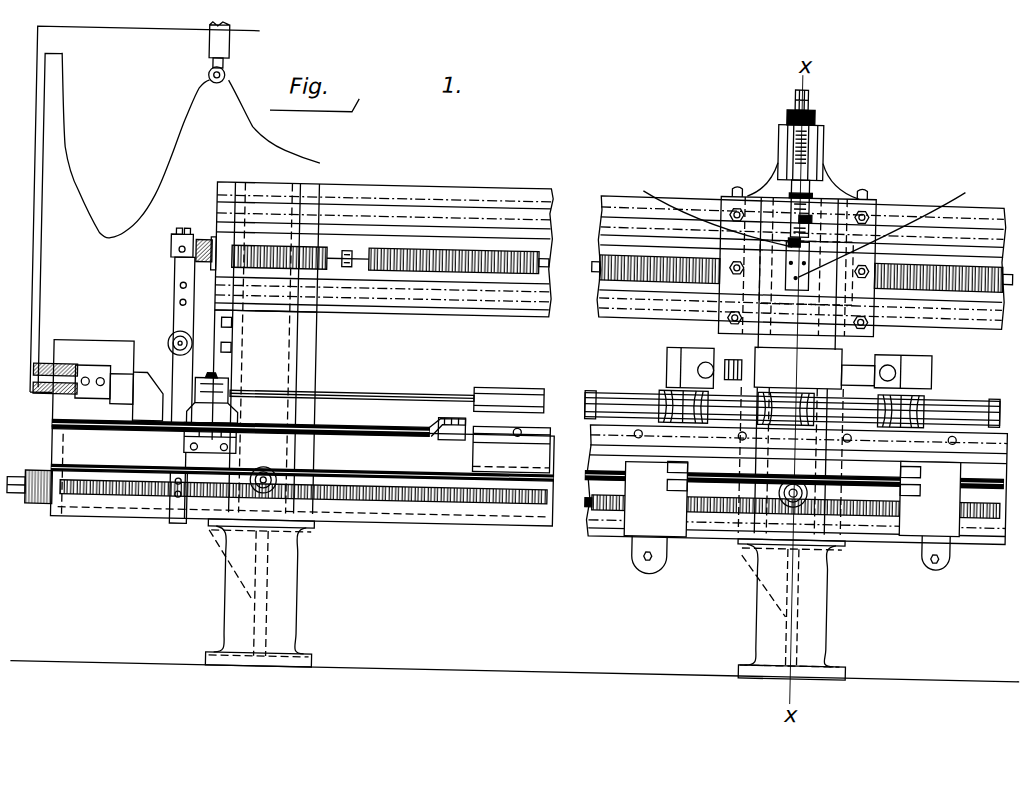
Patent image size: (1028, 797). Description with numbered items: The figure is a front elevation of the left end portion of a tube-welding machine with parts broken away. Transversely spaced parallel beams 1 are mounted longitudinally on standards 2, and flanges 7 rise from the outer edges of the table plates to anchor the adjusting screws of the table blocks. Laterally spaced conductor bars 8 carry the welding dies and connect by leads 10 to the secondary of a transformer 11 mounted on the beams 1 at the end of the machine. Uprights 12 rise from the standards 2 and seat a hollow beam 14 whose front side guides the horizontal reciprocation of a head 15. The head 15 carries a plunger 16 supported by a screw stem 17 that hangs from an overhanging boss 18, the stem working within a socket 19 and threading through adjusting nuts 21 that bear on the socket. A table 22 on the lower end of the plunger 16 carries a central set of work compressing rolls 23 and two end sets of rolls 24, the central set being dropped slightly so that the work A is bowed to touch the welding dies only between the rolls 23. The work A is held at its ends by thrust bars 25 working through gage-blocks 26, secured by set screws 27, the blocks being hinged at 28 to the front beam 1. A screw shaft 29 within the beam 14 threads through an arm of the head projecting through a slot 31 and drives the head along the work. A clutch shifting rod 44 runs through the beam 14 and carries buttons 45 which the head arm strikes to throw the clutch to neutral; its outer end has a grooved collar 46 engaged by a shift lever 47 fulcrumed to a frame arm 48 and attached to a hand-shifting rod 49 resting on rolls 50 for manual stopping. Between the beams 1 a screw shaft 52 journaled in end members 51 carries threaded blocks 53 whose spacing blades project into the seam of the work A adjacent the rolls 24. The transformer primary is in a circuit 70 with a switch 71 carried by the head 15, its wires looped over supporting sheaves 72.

The beams 1 is at (302, 472).
The standards 2 is at (526, 599).
The flanges 7 is at (601, 432).
The conductor bars 8 is at (470, 424).
The leads 10 is at (362, 423).
The transformer 11 is at (84, 363).
The uprights 12 is at (265, 348).
The hollow beam 14 is at (474, 198).
The head 15 is at (861, 222).
The plunger 16 is at (840, 343).
The screw stem 17 is at (789, 178).
The overhanging boss 18 is at (830, 143).
The socket 19 is at (812, 113).
The adjusting nuts 21 is at (804, 100).
The table 22 is at (672, 364).
The central work compressing rolls 23 is at (786, 408).
The end work compressing rolls 24 is at (660, 391).
The thrust bars 25 is at (400, 399).
The gage-blocks 26 is at (232, 403).
The set screws 27 is at (205, 384).
The hinge 28 is at (238, 440).
The screw shaft 29 is at (600, 270).
The slot 31 is at (605, 243).
The clutch shifting rod 44 is at (362, 259).
The buttons 45 is at (342, 258).
The grooved collar 46 is at (176, 245).
The shift lever 47 is at (170, 301).
The frame arm 48 is at (189, 343).
The hand-shifting rod 49 is at (369, 470).
The rolls 50 is at (265, 477).
The end members 51 is at (53, 482).
The screw shaft 52 is at (594, 505).
The blocks 53 is at (633, 540).
The circuit 70 is at (59, 91).
The switch 71 is at (767, 254).
The supporting sheaves 72 is at (212, 91).
The work A is at (612, 392).